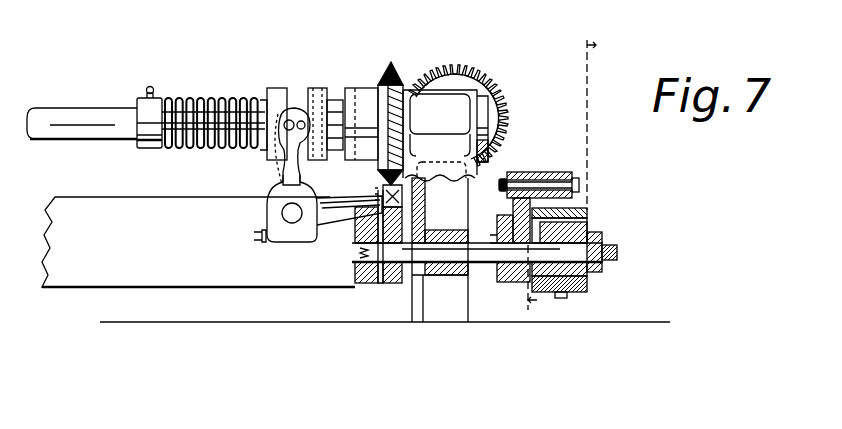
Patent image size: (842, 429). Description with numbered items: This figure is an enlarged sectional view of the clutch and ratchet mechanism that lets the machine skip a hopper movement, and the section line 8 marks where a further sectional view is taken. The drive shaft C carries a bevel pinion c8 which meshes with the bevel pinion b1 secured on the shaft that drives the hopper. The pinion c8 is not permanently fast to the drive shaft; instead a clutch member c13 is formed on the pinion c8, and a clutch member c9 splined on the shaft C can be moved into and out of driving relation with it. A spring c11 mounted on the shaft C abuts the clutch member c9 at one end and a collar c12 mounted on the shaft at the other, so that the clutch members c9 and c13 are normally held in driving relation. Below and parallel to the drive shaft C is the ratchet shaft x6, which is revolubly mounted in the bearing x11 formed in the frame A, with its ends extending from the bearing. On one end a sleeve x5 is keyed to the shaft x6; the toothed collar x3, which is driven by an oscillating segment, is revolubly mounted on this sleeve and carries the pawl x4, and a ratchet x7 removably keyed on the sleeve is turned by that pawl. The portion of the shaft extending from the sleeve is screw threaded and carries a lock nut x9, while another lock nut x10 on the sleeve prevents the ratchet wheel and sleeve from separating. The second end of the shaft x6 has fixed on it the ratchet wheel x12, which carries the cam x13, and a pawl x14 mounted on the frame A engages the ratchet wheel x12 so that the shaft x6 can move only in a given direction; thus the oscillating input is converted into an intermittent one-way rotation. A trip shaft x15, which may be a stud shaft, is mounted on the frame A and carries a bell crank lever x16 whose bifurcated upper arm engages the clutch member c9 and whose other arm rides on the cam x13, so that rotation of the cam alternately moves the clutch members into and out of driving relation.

The frame A is at (426, 300).
The drive shaft C is at (62, 112).
The bevel pinion c8 is at (384, 66).
The clutch member c9 is at (308, 104).
The spring c11 is at (188, 100).
The collar c12 is at (155, 150).
The clutch member c13 is at (364, 90).
The bevel pinion b1 is at (470, 74).
The section line 8— 8 is at (559, 196).
The collar x3 is at (513, 228).
The pawl x4 is at (557, 172).
The sleeve x5 is at (548, 294).
The ratchet shaft x6 is at (452, 248).
The ratchet x7 is at (563, 298).
The lock nut x9 is at (617, 262).
The lock nut x10 is at (590, 210).
The bearing x11 is at (478, 272).
The ratchet wheel x12 is at (380, 284).
The cam x13 is at (356, 240).
The pawl x14 is at (402, 207).
The trip shaft x15 is at (290, 222).
The bell crank lever x16 is at (268, 210).